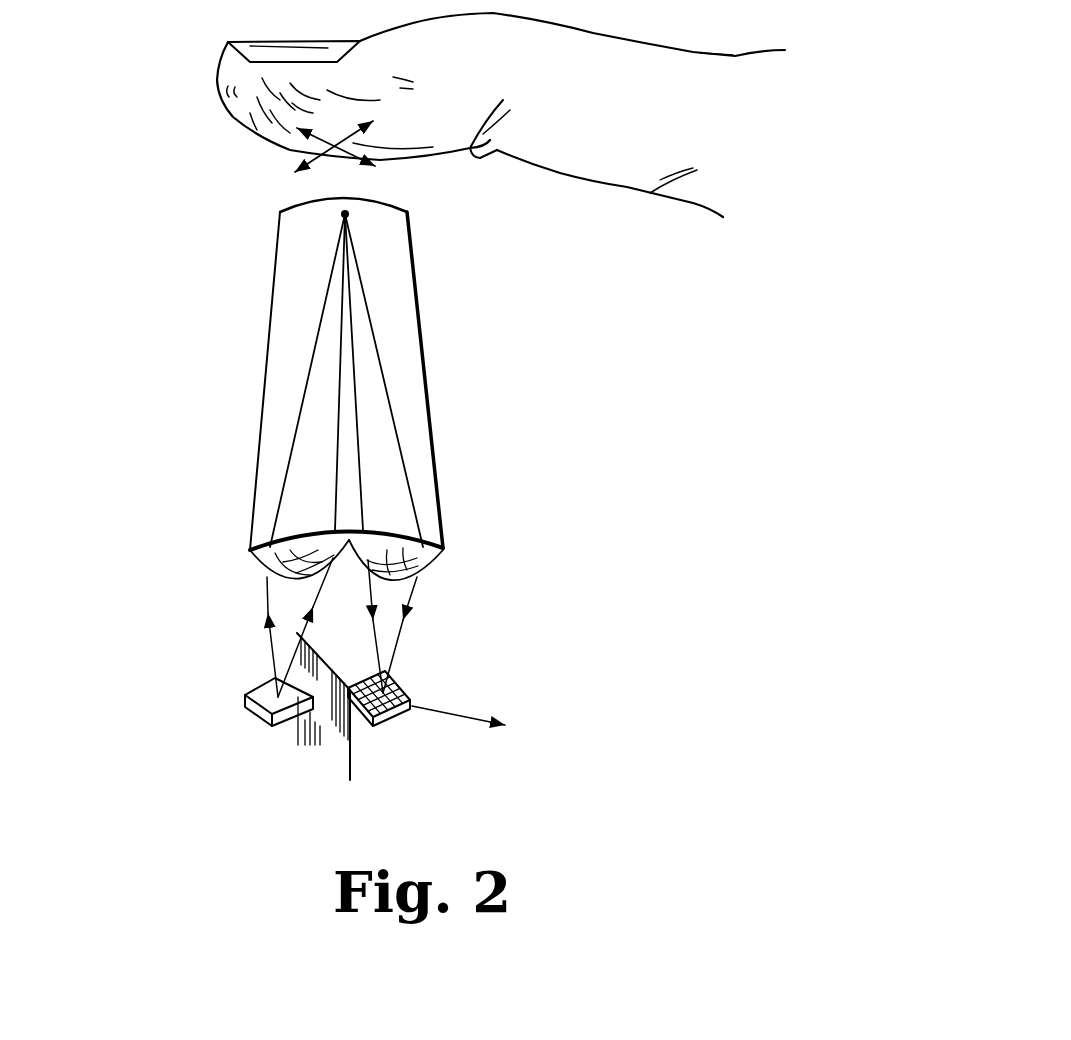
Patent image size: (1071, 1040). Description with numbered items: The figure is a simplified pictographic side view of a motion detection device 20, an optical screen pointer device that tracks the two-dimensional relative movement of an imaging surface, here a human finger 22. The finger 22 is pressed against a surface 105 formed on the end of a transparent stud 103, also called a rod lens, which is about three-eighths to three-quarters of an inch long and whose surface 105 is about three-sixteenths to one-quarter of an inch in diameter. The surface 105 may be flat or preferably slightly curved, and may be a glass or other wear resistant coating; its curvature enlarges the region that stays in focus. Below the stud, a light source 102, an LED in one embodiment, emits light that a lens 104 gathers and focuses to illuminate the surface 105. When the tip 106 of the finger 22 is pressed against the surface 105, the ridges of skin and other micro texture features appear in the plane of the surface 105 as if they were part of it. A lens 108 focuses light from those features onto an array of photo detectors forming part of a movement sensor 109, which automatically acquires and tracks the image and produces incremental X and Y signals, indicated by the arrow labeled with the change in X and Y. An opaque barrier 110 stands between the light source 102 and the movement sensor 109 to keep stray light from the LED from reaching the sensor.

The motion detection device 20 is at (148, 105).
The human finger 22 is at (608, 187).
The light source 102 is at (247, 690).
The transparent stud 103 is at (250, 518).
The lens 104 is at (257, 560).
The surface 105 is at (290, 208).
The tip 106 is at (250, 133).
The lens 108 is at (436, 565).
The movement sensor 109 is at (418, 680).
The opaque barrier 110 is at (350, 763).